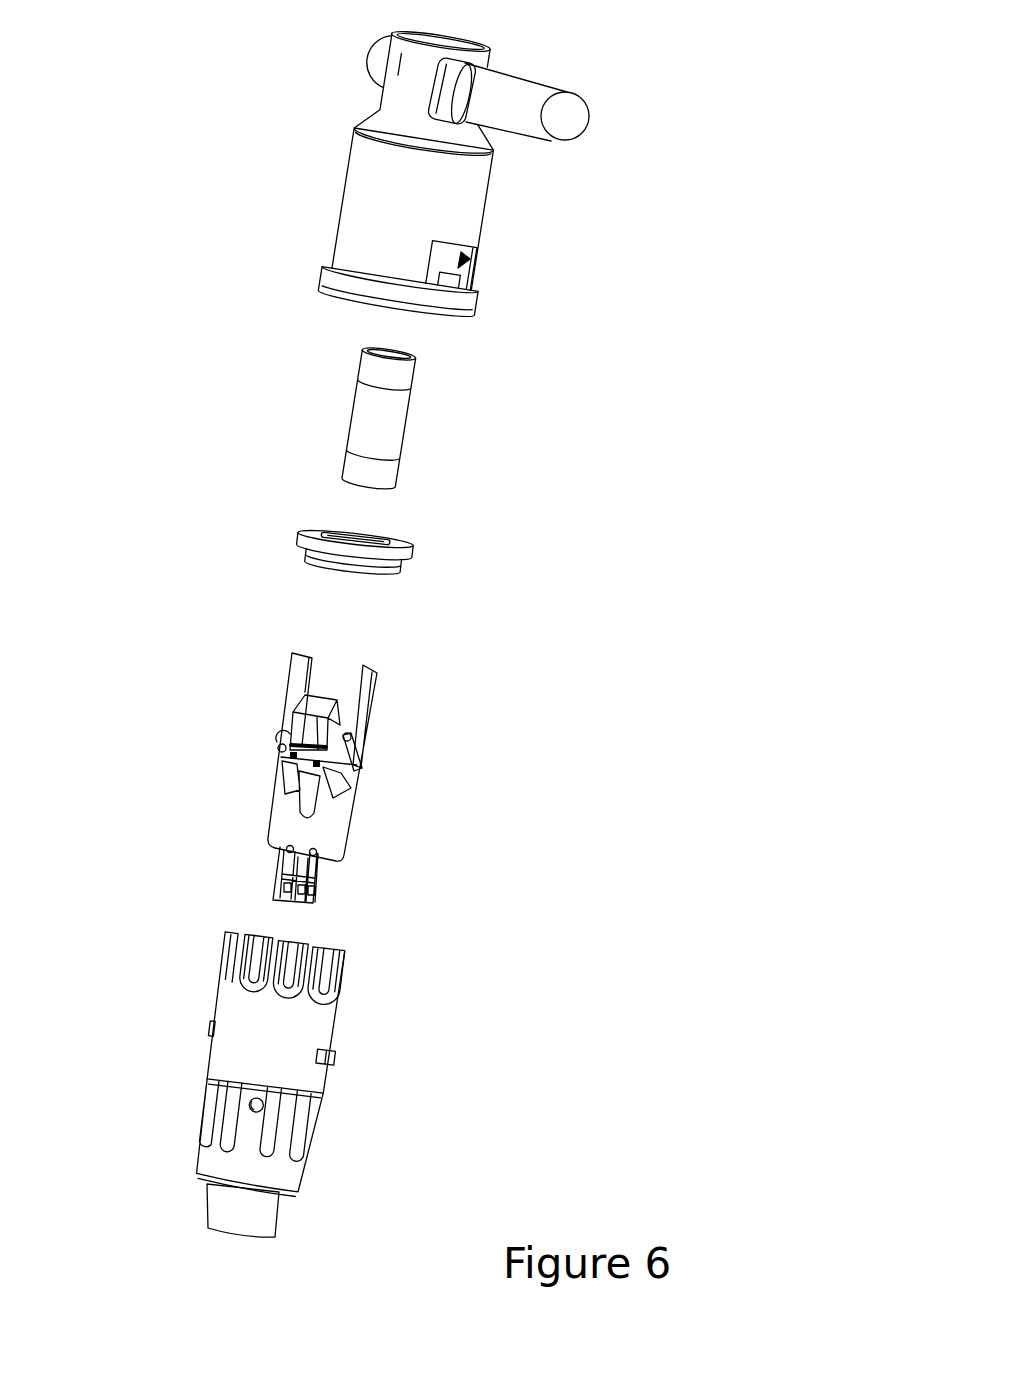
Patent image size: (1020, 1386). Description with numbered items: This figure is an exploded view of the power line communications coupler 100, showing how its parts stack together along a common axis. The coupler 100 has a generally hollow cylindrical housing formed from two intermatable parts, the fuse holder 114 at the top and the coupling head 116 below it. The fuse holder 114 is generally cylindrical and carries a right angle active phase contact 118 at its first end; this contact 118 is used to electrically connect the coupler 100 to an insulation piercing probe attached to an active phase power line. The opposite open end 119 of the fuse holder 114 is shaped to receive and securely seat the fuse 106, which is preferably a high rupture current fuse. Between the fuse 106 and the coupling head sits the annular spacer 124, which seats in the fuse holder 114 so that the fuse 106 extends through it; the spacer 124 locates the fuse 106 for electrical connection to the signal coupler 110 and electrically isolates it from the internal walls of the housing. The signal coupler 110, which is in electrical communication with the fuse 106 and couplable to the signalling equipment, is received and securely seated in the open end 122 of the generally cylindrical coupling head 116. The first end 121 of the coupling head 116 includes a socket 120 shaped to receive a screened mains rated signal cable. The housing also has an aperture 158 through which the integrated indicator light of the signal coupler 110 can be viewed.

The coupler 100 is at (398, 647).
The fuse 106 is at (363, 418).
The signal coupler 110 is at (283, 837).
The fuse holder 114 is at (392, 199).
The coupling head 116 is at (243, 1038).
The right angle active phase contact 118 is at (527, 97).
The open end 119 is at (420, 315).
The socket 120 is at (220, 1217).
The first end 121 is at (267, 1217).
The open end 122 is at (347, 930).
The annular spacer 124 is at (420, 567).
The aperture 158 is at (473, 270).